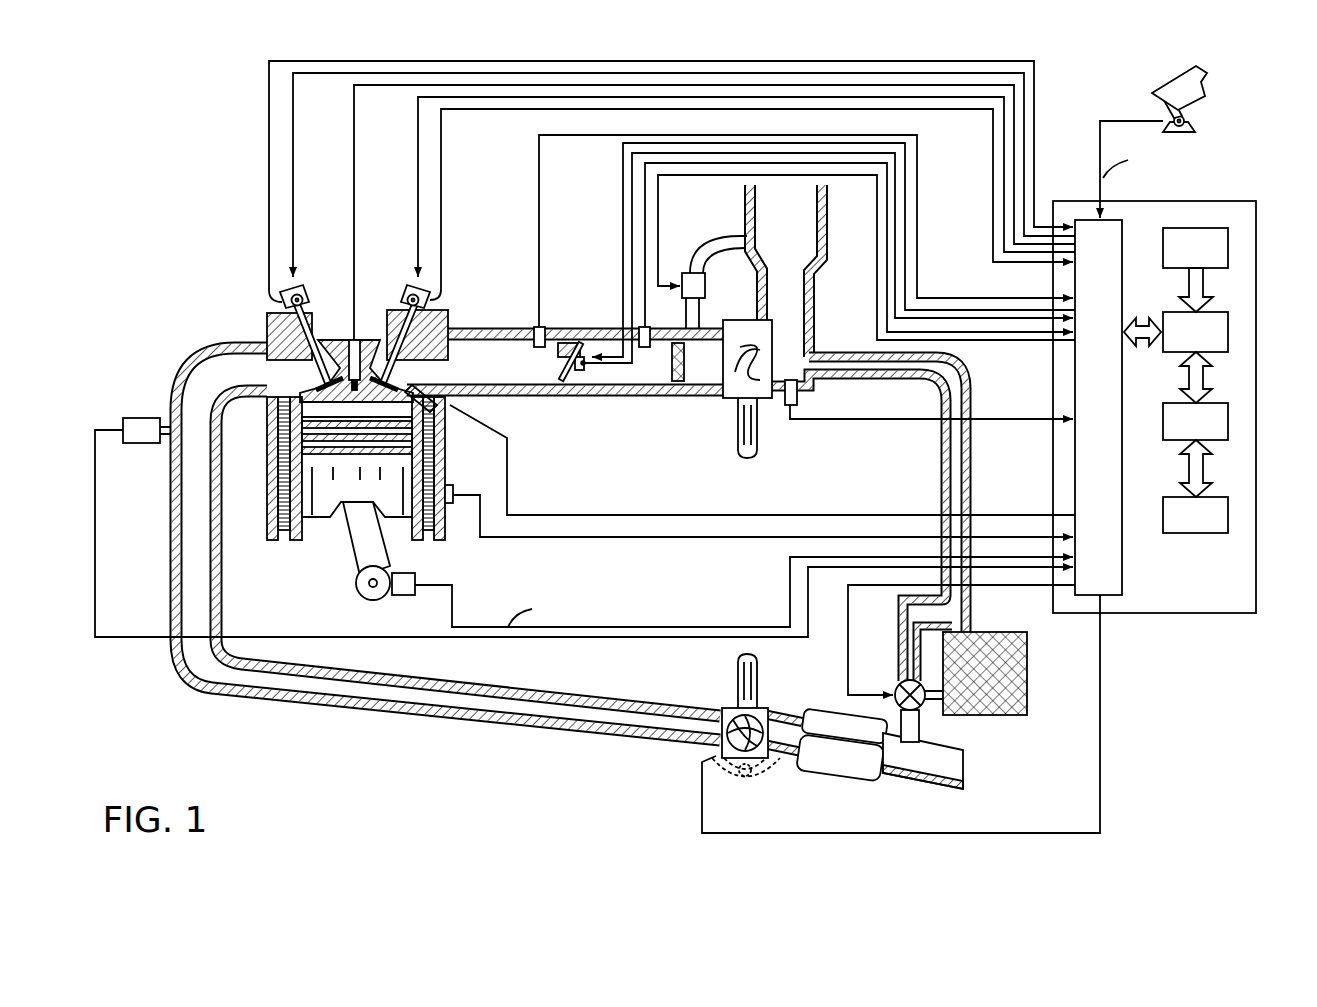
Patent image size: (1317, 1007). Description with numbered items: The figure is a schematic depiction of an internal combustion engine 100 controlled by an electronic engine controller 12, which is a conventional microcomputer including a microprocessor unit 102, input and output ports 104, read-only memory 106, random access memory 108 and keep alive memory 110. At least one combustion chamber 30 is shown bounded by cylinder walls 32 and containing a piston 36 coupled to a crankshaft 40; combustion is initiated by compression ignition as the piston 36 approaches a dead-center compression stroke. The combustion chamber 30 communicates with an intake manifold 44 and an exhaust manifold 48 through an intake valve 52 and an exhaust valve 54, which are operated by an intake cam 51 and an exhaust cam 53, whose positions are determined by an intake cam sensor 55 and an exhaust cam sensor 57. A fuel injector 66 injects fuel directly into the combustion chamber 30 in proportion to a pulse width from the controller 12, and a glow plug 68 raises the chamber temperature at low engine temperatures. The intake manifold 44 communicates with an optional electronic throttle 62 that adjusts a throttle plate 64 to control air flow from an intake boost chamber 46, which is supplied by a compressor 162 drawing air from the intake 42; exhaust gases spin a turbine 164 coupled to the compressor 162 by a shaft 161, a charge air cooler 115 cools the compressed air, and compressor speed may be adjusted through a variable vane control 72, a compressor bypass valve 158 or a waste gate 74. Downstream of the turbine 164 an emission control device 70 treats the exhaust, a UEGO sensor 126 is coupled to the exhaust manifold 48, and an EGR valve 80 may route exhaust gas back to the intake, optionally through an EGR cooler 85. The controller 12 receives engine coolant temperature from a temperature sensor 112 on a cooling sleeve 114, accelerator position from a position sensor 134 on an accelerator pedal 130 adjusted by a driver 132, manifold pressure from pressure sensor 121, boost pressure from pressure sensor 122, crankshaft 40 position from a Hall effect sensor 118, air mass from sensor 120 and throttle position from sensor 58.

The internal combustion engine 100 is at (207, 272).
The electronic engine controller 12 is at (1240, 200).
The input and output ports 104 is at (1122, 228).
The read-only memory 106 is at (1228, 245).
The microprocessor unit 102 is at (1228, 330).
The random access memory 108 is at (1228, 420).
The keep alive memory 110 is at (1228, 510).
The accelerator pedal 130 is at (1165, 92).
The driver 132 is at (1207, 80).
The position sensor 134 is at (1195, 128).
The combustion chamber 30 is at (288, 483).
The cylinder walls 32 is at (300, 530).
The piston 36 is at (338, 505).
The crankshaft 40 is at (360, 595).
The cooling sleeve 114 is at (283, 455).
The temperature sensor 112 is at (452, 487).
The Hall effect sensor 118 is at (400, 597).
The exhaust manifold 48 is at (226, 380).
The intake manifold 44 is at (479, 373).
The intake boost chamber 46 is at (634, 373).
The intake 42 is at (774, 253).
The exhaust valve 54 is at (312, 357).
The intake valve 52 is at (398, 384).
The exhaust cam 53 is at (298, 288).
The intake cam 51 is at (408, 288).
The exhaust cam sensor 57 is at (282, 296).
The intake cam sensor 55 is at (430, 298).
The fuel injector 66 is at (349, 345).
The glow plug 68 is at (448, 407).
The electronic throttle 62 is at (572, 345).
The throttle plate 64 is at (580, 342).
The throttle position sensor 58 is at (584, 376).
The pressure sensor 121 is at (536, 330).
The pressure sensor 122 is at (647, 328).
The charge air cooler 115 is at (675, 375).
The compressor bypass valve 158 is at (688, 275).
The compressor 162 is at (722, 394).
The shaft 161 is at (738, 440).
The turbine 164 is at (722, 705).
The air mass sensor 120 is at (797, 395).
The variable vane control 72 is at (712, 748).
The waste gate 74 is at (748, 778).
The emission control device 70 is at (805, 770).
The EGR valve 80 is at (900, 683).
The EGR cooler 85 is at (1027, 665).
The UEGO sensor 126 is at (122, 418).